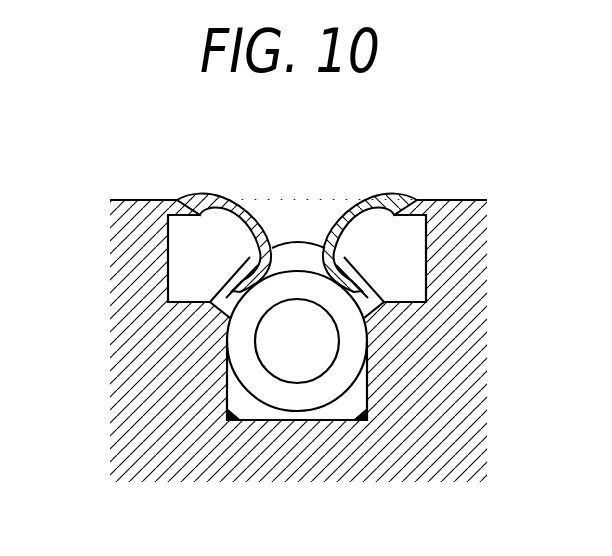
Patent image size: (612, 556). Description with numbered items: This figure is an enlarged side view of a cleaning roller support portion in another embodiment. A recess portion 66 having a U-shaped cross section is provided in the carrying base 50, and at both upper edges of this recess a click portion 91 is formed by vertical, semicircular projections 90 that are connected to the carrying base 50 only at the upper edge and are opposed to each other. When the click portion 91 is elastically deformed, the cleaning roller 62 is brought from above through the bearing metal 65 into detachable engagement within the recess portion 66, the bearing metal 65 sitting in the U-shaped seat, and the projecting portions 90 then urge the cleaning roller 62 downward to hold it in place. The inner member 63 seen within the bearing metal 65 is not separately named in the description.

The carrying base 50 is at (447, 341).
The cleaning roller 62 is at (377, 298).
The rod 63 is at (277, 336).
The bearing metal 65 is at (340, 370).
The recess portion 66 is at (252, 410).
The semicircular projections 90 is at (223, 199).
The click portion 91 is at (293, 236).